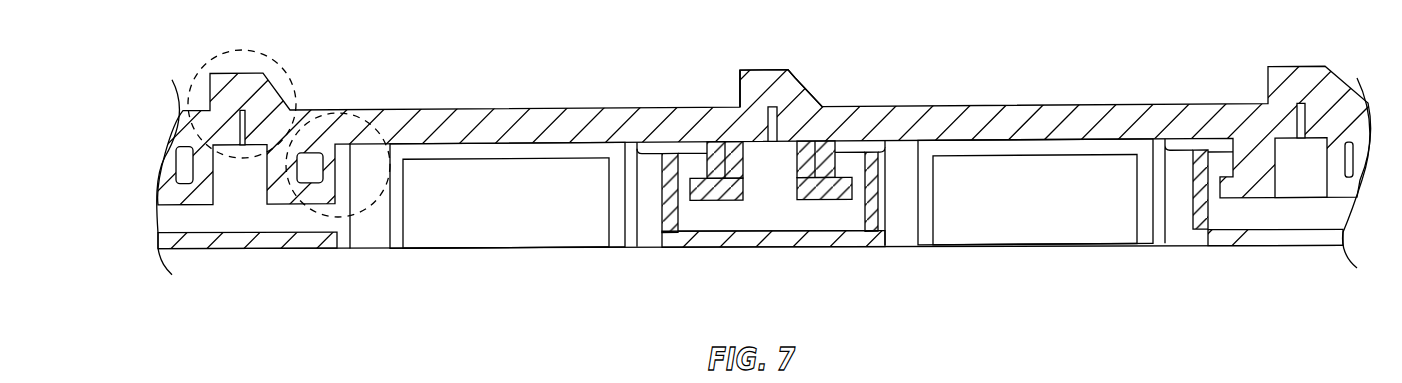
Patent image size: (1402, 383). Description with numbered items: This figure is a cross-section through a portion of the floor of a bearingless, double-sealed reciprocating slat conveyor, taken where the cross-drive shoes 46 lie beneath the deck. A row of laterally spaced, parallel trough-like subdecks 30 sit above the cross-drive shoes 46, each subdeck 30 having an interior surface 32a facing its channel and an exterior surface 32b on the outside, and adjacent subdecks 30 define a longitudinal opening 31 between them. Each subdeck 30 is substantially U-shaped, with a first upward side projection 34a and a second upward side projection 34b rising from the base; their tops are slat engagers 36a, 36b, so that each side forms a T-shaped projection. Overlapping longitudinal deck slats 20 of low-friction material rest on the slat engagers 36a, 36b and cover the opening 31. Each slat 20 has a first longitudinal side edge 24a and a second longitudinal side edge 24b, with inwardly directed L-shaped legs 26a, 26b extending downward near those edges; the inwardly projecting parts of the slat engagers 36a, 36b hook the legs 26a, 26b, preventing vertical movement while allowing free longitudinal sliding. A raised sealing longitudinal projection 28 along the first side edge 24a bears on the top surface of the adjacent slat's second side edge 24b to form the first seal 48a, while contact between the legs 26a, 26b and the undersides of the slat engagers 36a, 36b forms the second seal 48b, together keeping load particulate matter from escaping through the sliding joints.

The deck slat 20 is at (530, 130).
The first longitudinal side edge 24a is at (740, 100).
The second longitudinal side edge 24b is at (772, 112).
The slat leg 26a is at (830, 201).
The slat leg 26b is at (700, 202).
The raised sealing longitudinal projection 28 is at (762, 70).
The slat-supporting guide trough subdeck 30 is at (752, 250).
The longitudinal opening 31 is at (337, 243).
The interior surface 32a is at (782, 231).
The exterior surface 32b is at (718, 250).
The first upward side projection 34a is at (885, 210).
The second upward side projection 34b is at (664, 204).
The slat engager 36a is at (852, 142).
The slat engager 36b is at (700, 140).
The cross-drive shoe 46 is at (426, 160).
The first seal 48a is at (240, 52).
The second seal 48b is at (356, 112).